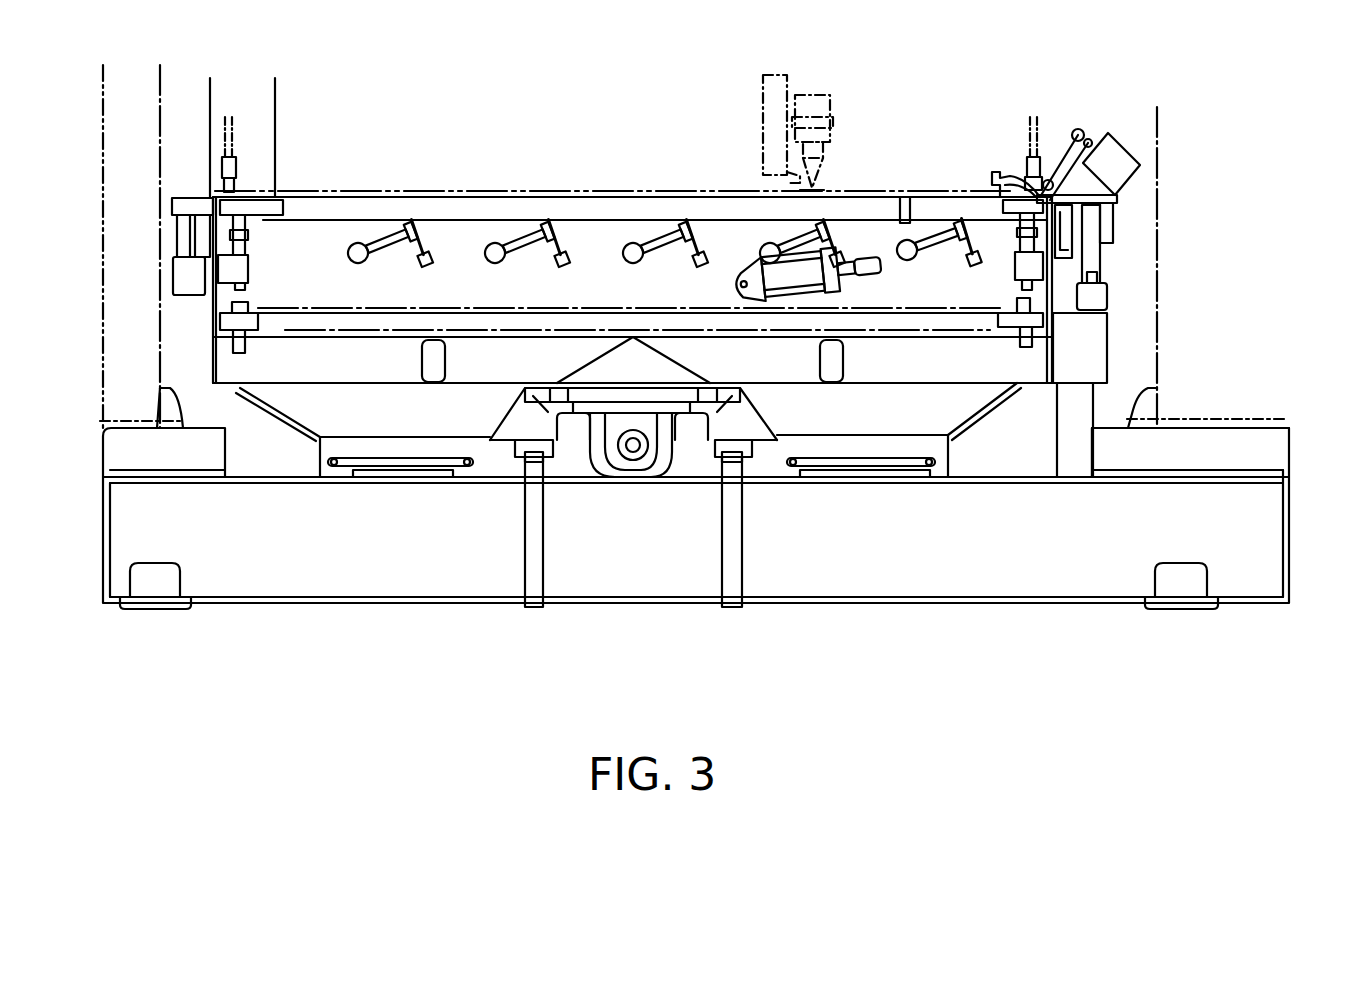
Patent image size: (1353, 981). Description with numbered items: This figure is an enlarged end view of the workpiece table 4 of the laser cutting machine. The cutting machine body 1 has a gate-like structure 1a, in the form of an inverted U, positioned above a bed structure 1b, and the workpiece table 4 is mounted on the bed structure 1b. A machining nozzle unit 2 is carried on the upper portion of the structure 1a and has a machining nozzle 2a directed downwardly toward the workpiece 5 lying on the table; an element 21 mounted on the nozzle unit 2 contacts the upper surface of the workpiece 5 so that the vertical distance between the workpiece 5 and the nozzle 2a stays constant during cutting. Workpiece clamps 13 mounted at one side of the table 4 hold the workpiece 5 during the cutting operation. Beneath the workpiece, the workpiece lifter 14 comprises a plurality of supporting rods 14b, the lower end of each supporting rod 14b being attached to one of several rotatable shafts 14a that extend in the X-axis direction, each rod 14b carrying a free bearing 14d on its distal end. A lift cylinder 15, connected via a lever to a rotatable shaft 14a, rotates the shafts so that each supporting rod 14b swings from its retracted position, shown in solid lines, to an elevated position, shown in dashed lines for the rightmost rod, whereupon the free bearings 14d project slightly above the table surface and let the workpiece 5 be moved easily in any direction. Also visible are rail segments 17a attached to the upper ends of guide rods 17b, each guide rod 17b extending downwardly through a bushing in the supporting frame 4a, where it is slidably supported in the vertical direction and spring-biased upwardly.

The cutting machine body 1 is at (1290, 503).
The gate-like structure 1a is at (1163, 319).
The bed structure 1b is at (390, 587).
The machining nozzle unit 2 is at (832, 105).
The machining nozzle 2a is at (818, 160).
The element 21 is at (818, 186).
The workpiece table 4 is at (213, 351).
The supporting frame 4a is at (1037, 268).
The workpiece 5 is at (578, 190).
The workpiece clamp 13 is at (1010, 176).
The workpiece lifter 14 is at (647, 191).
The rotatable shaft 14a is at (358, 243).
The supporting rod 14b is at (392, 228).
The free bearing 14d is at (448, 207).
The lift cylinder 15 is at (735, 273).
The rail segment 17a is at (1035, 219).
The guide rod 17b is at (1035, 246).